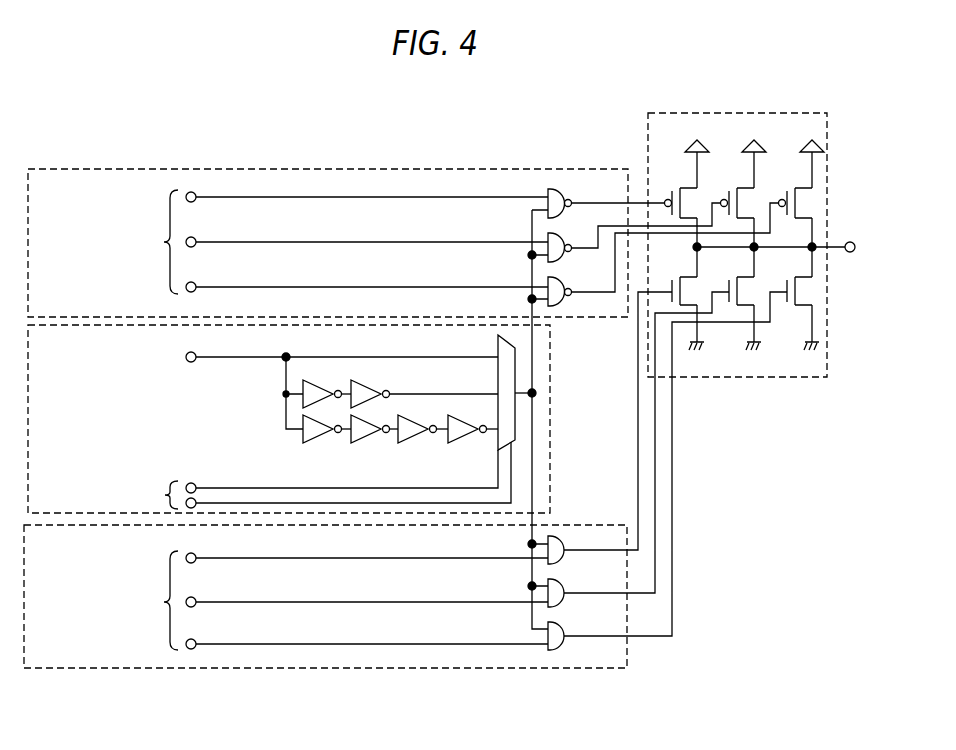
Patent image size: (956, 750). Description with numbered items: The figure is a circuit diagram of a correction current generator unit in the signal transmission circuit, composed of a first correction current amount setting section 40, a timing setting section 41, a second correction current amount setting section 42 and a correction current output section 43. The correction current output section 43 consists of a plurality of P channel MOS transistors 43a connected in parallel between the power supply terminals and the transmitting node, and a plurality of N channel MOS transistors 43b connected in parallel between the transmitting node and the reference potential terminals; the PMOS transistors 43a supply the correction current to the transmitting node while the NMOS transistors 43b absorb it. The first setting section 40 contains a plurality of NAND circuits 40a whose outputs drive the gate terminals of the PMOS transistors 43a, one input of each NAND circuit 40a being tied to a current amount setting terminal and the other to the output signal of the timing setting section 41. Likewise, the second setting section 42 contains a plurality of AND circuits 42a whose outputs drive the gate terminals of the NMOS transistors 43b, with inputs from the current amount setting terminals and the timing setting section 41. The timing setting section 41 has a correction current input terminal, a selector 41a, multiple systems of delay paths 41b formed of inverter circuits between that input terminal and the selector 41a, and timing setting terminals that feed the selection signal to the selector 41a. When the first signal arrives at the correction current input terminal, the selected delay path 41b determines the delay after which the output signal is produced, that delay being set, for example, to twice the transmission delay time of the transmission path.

The correction current amount setting section (1) 40 is at (403, 369).
The NAND circuits 40a is at (557, 183).
The timing setting section 41 is at (319, 419).
The selector 41a is at (516, 411).
The delay paths 41b is at (316, 378).
The correction current amount setting section (2) 42 is at (405, 508).
The AND circuits 42a is at (553, 659).
The correction current output section 43 is at (777, 274).
The P channel MOS transistors 43a is at (812, 206).
The N channel MOS transistors 43b is at (807, 292).